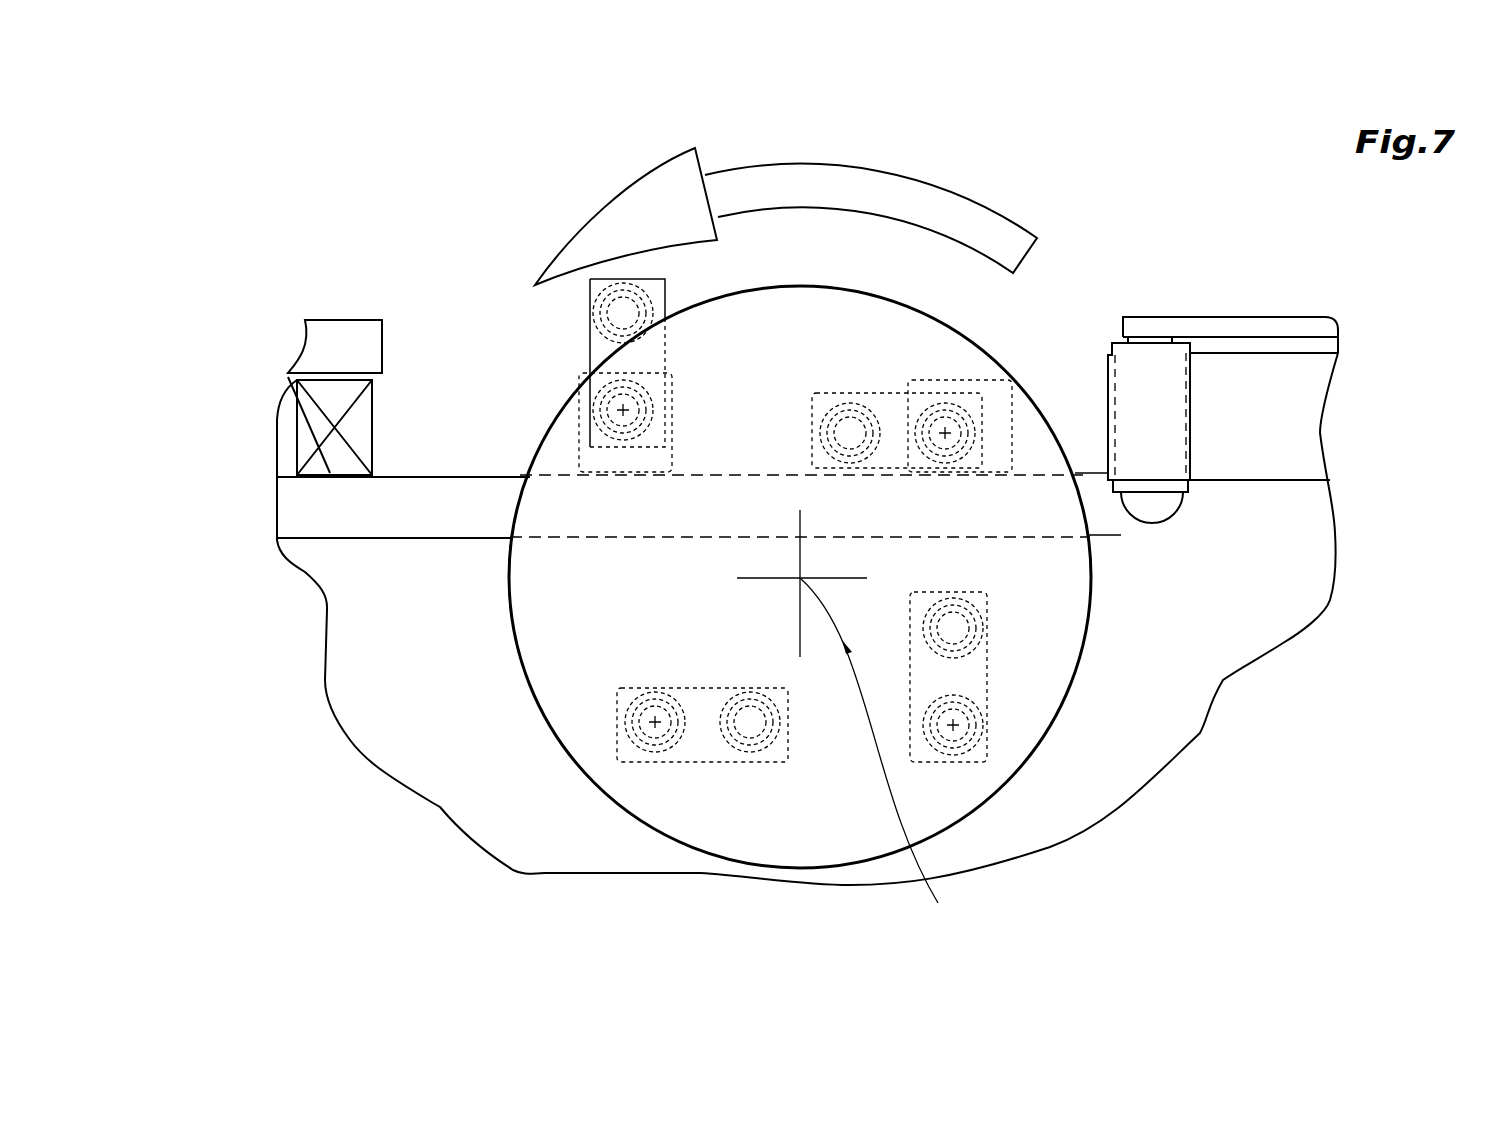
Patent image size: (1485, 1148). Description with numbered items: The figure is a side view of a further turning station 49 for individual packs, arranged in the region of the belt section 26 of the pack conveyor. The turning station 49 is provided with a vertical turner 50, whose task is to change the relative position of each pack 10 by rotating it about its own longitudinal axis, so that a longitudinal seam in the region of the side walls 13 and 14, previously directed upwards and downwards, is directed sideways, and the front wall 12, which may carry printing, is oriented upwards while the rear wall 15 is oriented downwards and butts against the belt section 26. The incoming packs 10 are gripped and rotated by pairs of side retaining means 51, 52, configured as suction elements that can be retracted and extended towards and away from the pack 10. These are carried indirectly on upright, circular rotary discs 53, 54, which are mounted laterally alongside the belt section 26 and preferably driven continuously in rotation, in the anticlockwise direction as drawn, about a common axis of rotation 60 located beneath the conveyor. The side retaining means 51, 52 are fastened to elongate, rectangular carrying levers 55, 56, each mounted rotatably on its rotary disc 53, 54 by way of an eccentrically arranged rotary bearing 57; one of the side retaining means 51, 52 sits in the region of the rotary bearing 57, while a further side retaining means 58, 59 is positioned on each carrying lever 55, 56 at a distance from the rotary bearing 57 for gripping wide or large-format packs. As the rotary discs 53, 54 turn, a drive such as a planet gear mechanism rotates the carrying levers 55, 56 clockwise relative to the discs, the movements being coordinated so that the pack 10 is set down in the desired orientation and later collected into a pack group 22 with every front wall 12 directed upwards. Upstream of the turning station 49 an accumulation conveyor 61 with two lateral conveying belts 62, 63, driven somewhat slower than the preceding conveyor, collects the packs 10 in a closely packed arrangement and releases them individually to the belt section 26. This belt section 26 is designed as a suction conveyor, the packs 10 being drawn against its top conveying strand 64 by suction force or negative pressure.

The pack 10 is at (1028, 453).
The front wall 12 is at (653, 332).
The side wall 13 is at (297, 420).
The side wall 14 is at (375, 410).
The rear wall 15 is at (288, 372).
The pack group 22 is at (288, 416).
The belt section 26 is at (456, 609).
The turning station 49 is at (1110, 196).
The vertical turner 50 is at (1092, 315).
The side retaining means 51 is at (932, 381).
The side retaining means 52 is at (948, 428).
The rotary disc 53 is at (1182, 711).
The rotary disc 54 is at (1182, 711).
The carrying lever 55 is at (870, 530).
The carrying lever 56 is at (653, 290).
The rotary bearing 57 is at (1087, 535).
The side retaining means 58 is at (1182, 711).
The side retaining means 59 is at (1077, 680).
The axis of rotation 60 is at (882, 762).
The accumulation conveyor 61 is at (1364, 299).
The conveying belt 62 is at (1287, 420).
The conveying belt 63 is at (1287, 413).
The top conveying strand 64 is at (453, 477).